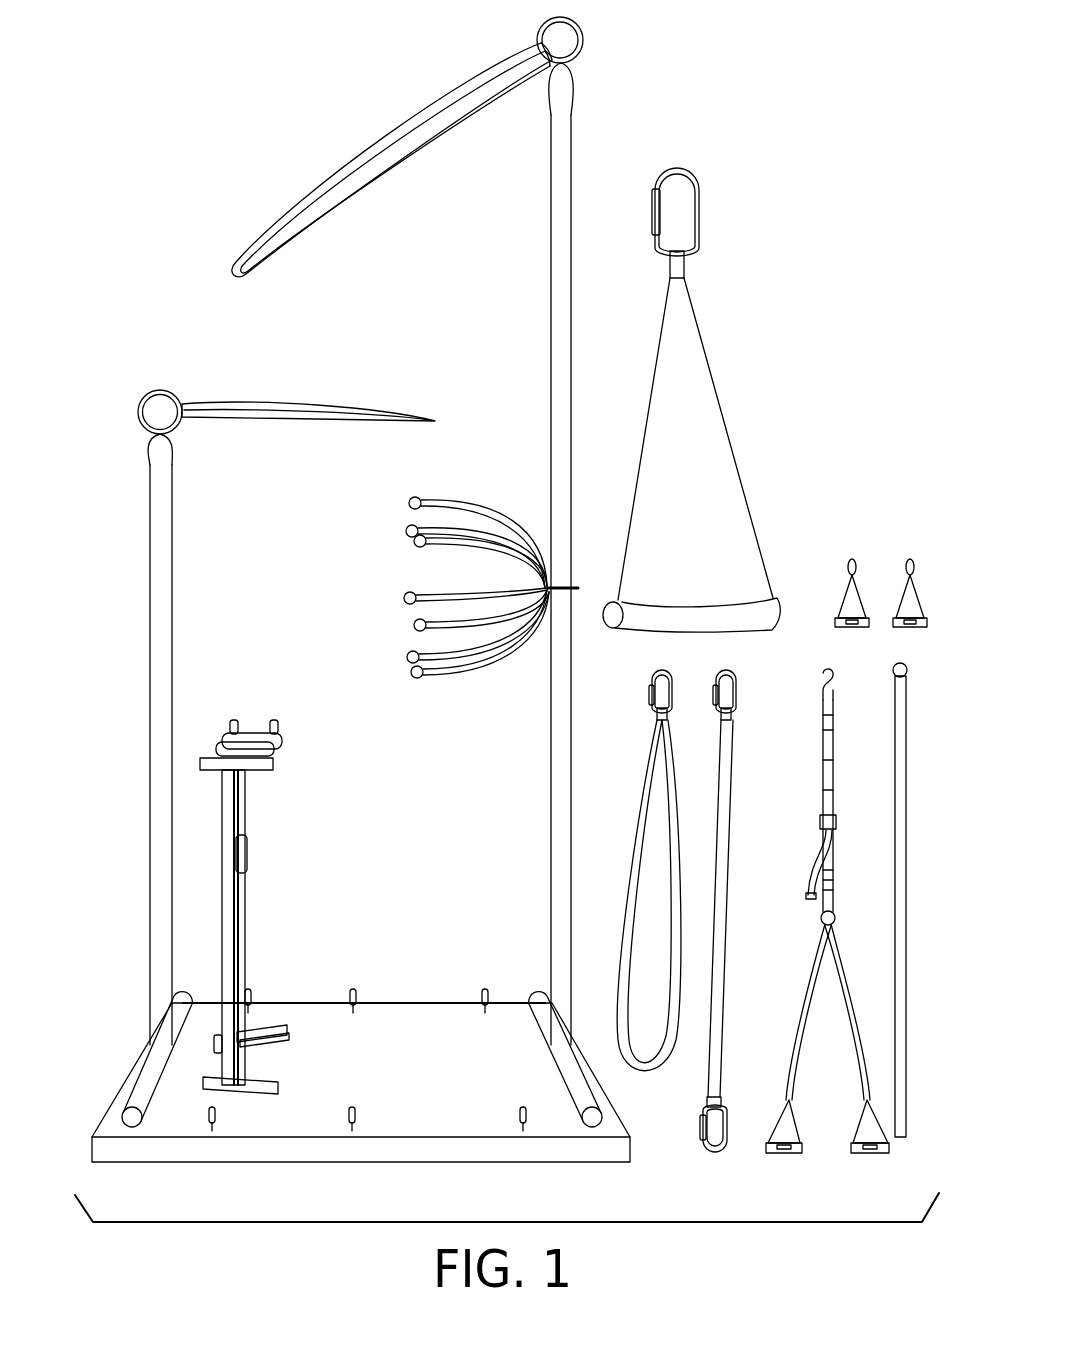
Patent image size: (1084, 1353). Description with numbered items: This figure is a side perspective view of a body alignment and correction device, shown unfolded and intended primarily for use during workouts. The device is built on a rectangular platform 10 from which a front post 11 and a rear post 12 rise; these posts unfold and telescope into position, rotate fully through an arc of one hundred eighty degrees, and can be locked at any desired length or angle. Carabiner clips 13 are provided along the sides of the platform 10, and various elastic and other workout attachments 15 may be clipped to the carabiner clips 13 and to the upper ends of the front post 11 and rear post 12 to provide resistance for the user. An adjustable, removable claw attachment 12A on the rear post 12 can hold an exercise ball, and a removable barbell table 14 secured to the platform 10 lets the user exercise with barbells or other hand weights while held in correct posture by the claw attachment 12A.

The platform 10 is at (127, 1070).
The front post 11 is at (150, 528).
The rear post 12 is at (572, 167).
The claw attachment 12A is at (405, 595).
The carabiner clips 13 is at (523, 1107).
The barbell table 14 is at (247, 845).
The workout attachments 15 is at (290, 410).